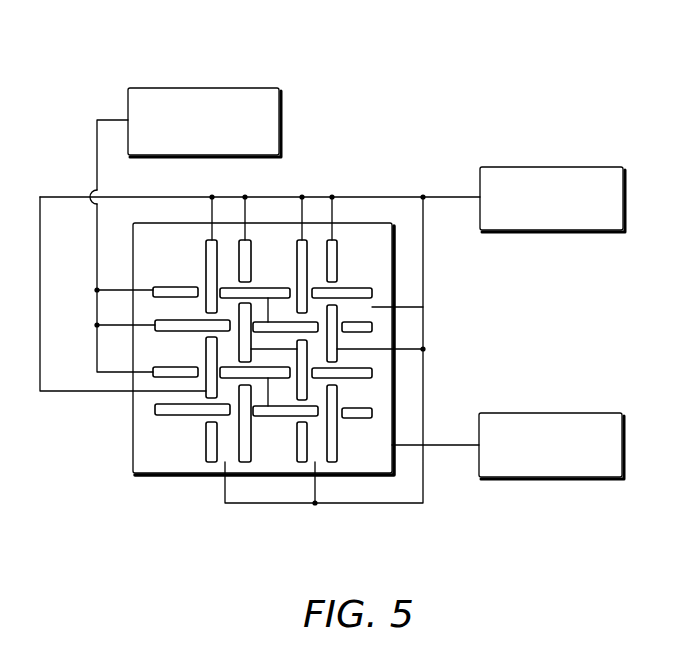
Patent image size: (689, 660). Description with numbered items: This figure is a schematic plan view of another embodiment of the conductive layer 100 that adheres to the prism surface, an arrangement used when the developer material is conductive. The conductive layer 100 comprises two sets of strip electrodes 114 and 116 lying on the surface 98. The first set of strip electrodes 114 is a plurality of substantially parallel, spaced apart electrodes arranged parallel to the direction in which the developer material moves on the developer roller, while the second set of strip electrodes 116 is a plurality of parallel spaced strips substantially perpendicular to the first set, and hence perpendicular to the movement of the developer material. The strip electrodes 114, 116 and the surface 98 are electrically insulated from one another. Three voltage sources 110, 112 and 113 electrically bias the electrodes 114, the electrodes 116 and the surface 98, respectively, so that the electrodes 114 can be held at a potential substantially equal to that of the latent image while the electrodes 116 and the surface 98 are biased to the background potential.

The conductive layer 100 is at (393, 142).
The surface 98 is at (382, 307).
The voltage source 110 is at (258, 90).
The voltage source 112 is at (582, 170).
The voltage source 113 is at (577, 414).
The set of strip electrodes 114 is at (175, 290).
The set of strip electrodes 116 is at (298, 272).